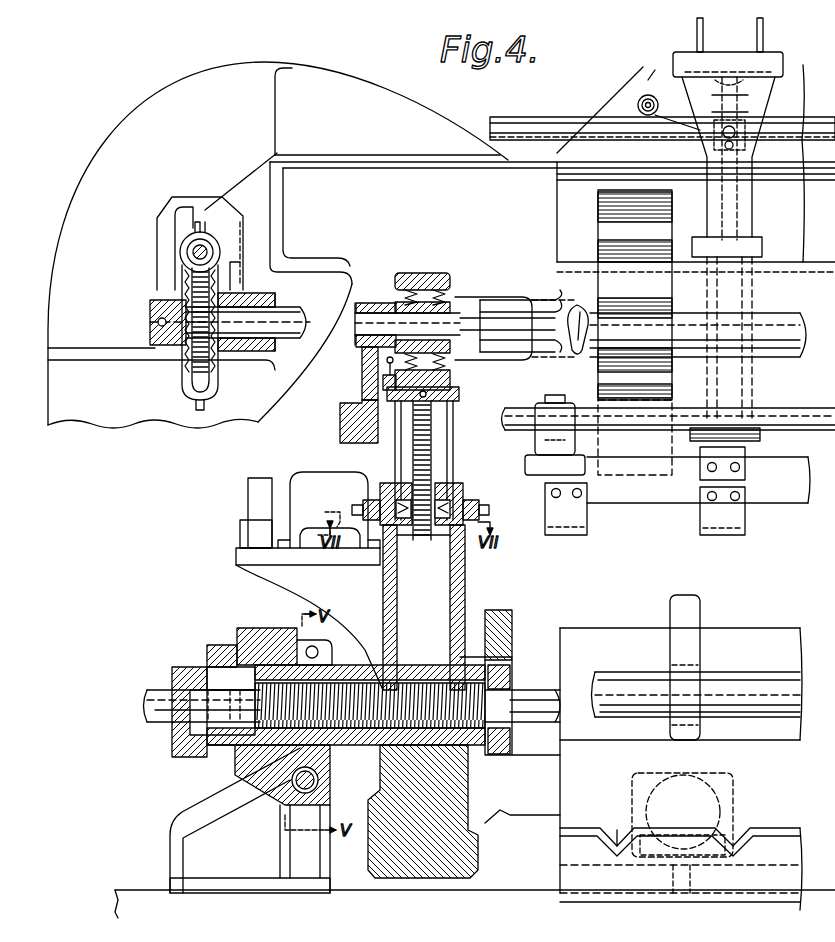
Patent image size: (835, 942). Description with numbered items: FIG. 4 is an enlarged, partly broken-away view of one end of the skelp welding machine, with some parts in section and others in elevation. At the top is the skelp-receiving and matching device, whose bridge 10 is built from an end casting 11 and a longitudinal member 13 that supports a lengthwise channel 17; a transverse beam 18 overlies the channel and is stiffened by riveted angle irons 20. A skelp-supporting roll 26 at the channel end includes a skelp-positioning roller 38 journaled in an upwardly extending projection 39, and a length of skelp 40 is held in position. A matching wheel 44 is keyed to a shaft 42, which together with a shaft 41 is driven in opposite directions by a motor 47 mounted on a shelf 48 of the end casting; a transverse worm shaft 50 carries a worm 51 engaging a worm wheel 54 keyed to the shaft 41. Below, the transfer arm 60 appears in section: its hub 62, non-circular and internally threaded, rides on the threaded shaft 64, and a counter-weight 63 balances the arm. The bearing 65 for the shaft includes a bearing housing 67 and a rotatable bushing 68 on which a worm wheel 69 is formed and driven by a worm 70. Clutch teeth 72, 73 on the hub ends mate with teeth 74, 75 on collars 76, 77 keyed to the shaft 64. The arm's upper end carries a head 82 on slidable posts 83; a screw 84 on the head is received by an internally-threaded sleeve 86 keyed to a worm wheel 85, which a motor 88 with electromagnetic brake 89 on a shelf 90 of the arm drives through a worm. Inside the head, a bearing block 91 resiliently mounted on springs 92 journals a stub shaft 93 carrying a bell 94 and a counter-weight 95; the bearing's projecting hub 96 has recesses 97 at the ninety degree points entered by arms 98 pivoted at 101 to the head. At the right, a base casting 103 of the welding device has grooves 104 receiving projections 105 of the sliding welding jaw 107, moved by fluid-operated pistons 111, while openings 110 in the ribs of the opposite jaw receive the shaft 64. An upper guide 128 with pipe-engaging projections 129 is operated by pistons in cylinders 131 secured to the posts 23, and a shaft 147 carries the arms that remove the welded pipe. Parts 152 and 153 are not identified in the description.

The bridge 10 is at (447, 176).
The end casting 11 is at (110, 418).
The longitudinal member 13 is at (538, 170).
The channel 17 is at (657, 68).
The transverse beam 18 is at (722, 60).
The angle iron 20 is at (756, 27).
The post 23 is at (735, 313).
The skelp-supporting roll 26 is at (742, 124).
The skelp-positioning roller 38 is at (640, 80).
The projection 39 is at (668, 100).
The skelp 40 is at (530, 125).
The shaft 41 is at (285, 322).
The shaft 42 is at (783, 343).
The skelp matching wheel 44 is at (604, 232).
The motor 47 is at (165, 242).
The shelf 48 is at (148, 318).
The transverse worm shaft 50 is at (193, 252).
The worm 51 is at (185, 237).
The worm wheel 54 is at (190, 368).
The transfer arm 60 is at (462, 568).
The hub 62 is at (345, 748).
The counter-weight 63 is at (412, 862).
The shaft 64 is at (148, 695).
The bearing 65 is at (212, 800).
The bearing housing 67 is at (253, 630).
The bushing 68 is at (220, 650).
The worm wheel 69 is at (322, 648).
The worm 70 is at (320, 785).
The clutch teeth 72 is at (205, 760).
The clutch teeth 73 is at (478, 640).
The teeth 74 is at (200, 675).
The teeth 75 is at (510, 668).
The collar 76 is at (175, 738).
The collar 77 is at (510, 746).
The head 82 is at (413, 273).
The post 83 is at (405, 428).
The screw 84 is at (452, 405).
The worm wheel 85 is at (458, 500).
The internally-threaded sleeve 86 is at (448, 480).
The motor 88 is at (314, 478).
The electromagnetic brake 89 is at (250, 501).
The shelf 90 is at (270, 575).
The slidable bearing block 91 is at (452, 302).
The spring 92 is at (398, 292).
The stub shaft 93 is at (362, 322).
The bell 94 is at (488, 302).
The counter-weight 95 is at (345, 412).
The projecting hub 96 is at (360, 345).
The recess 97 is at (358, 306).
The arm 98 is at (372, 372).
The pivot 101 is at (383, 385).
The base casting 103 is at (708, 892).
The groove 104 is at (618, 838).
The projection 105 is at (625, 860).
The welding jaw 107 is at (752, 632).
The opening 110 is at (500, 657).
The fluid-operated piston 111 is at (740, 800).
The upper guide 128 is at (674, 495).
The pipe-engaging projection 129 is at (580, 518).
The cylinder 131 is at (745, 300).
The shaft 147 is at (745, 684).
The bar 152 is at (780, 422).
The bracket 153 is at (542, 445).